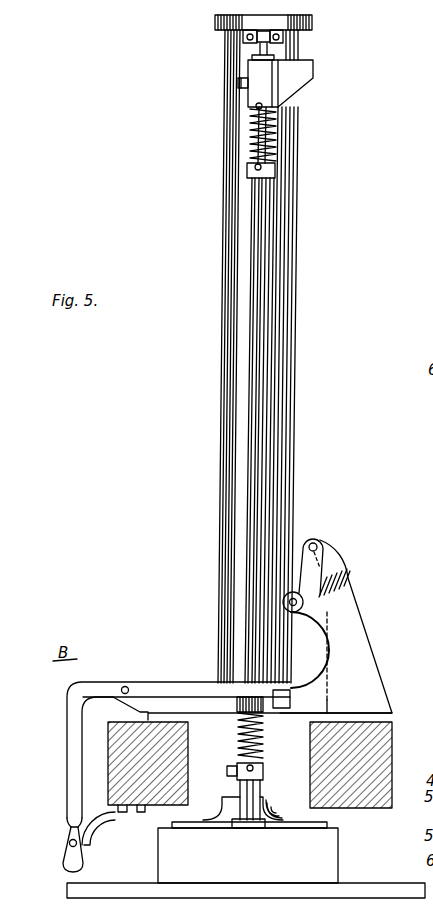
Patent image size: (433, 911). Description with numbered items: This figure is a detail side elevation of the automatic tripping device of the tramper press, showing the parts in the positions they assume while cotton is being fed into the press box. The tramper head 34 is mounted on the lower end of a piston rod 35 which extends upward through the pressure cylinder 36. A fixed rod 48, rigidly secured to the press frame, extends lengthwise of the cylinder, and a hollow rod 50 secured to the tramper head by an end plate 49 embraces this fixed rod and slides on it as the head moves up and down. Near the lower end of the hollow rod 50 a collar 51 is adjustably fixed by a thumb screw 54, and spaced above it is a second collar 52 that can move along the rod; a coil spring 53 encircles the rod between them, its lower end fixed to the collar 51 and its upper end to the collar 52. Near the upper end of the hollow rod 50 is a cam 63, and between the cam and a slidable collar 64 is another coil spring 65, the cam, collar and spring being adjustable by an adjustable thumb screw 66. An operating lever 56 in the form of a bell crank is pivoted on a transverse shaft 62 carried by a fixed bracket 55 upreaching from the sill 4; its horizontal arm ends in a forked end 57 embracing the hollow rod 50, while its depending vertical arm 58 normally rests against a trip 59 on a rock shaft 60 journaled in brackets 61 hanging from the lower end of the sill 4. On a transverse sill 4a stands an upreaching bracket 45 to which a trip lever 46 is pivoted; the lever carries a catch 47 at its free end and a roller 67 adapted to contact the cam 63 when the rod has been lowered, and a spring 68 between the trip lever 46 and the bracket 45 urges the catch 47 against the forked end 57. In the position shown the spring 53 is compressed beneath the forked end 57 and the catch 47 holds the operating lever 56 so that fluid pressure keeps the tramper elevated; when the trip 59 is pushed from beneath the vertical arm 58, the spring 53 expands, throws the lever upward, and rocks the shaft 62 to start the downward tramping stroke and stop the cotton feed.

The tramper head 34 is at (343, 892).
The piston rod 35 is at (262, 787).
The pressure cylinder 36 is at (224, 412).
The sill 4 is at (139, 767).
The transverse sill 4a is at (388, 768).
The upreaching bracket 45 is at (357, 648).
The trip lever 46 is at (320, 568).
The catch 47 is at (291, 697).
The fixed rod 48 is at (270, 49).
The end plate 49 is at (248, 830).
The hollow rod 50 is at (258, 400).
The collar 51 is at (264, 770).
The second collar 52 is at (265, 715).
The coil spring 53 is at (262, 746).
The thumb screw 54 is at (227, 770).
The fixed bracket 55 is at (118, 707).
The operating lever 56 is at (164, 690).
The forked end 57 is at (265, 690).
The vertical arm 58 is at (67, 763).
The trip 59 is at (68, 841).
The rock shaft 60 is at (69, 842).
The brackets 61 is at (104, 833).
The transverse shaft 62 is at (125, 686).
The cam 63 is at (298, 86).
The slidable collar 64 is at (276, 170).
The coil spring 65 is at (277, 135).
The adjustable thumb screw 66 is at (238, 83).
The roller 67 is at (305, 609).
The spring 68 is at (347, 590).